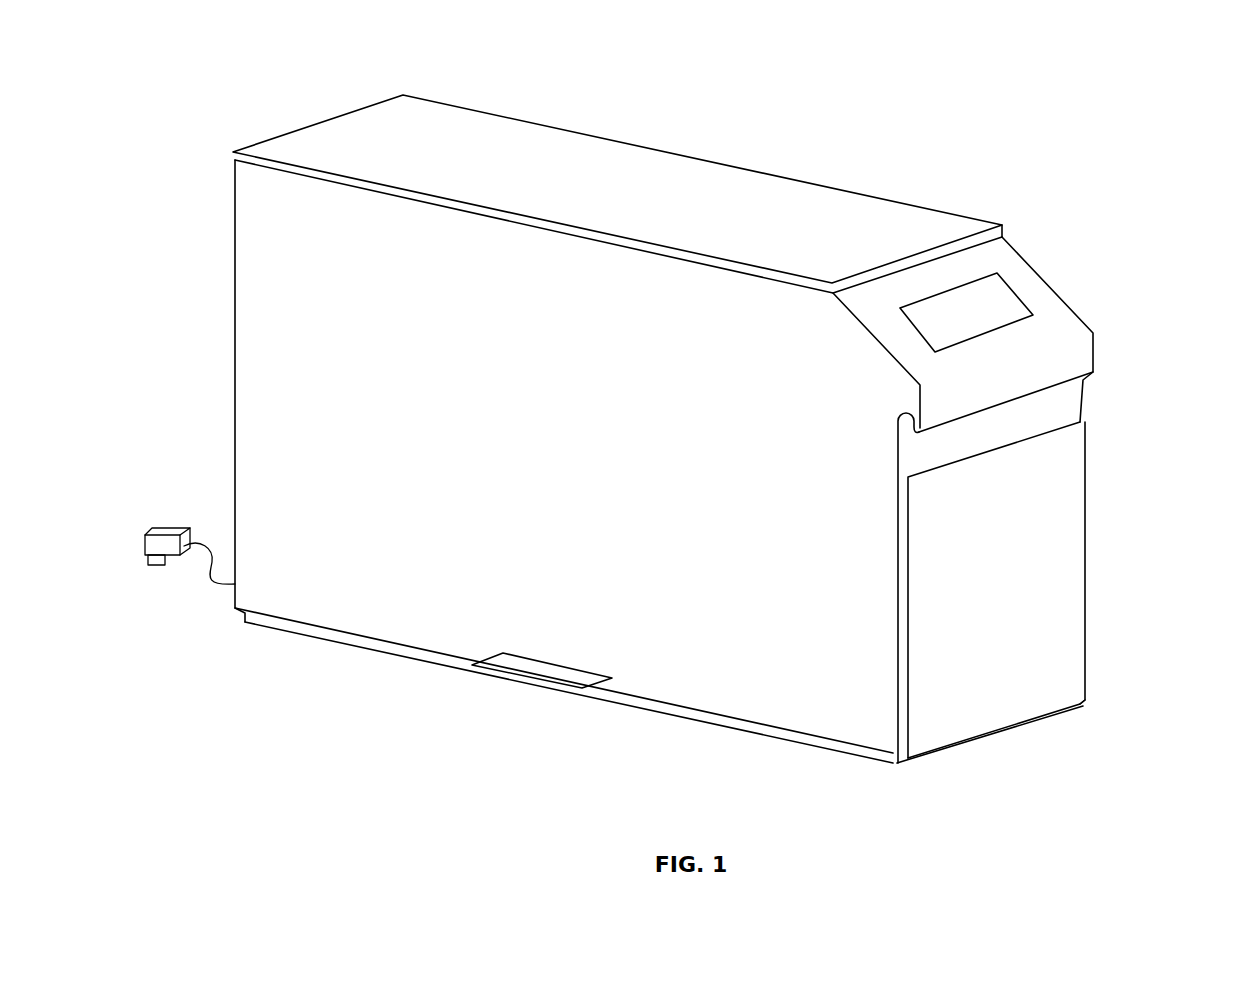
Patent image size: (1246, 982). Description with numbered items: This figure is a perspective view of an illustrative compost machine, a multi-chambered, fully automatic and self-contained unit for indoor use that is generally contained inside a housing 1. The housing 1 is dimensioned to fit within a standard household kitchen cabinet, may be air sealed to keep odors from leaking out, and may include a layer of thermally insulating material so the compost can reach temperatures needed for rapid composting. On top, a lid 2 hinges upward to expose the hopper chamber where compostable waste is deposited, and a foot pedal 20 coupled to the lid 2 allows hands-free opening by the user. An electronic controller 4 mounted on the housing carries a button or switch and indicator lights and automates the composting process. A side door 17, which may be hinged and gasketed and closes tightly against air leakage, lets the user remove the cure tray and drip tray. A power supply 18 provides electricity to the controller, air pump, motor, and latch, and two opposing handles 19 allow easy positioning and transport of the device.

The housing 1 is at (250, 307).
The lid 2 is at (388, 122).
The electronic controller 4 is at (967, 307).
The side door 17 is at (950, 708).
The power supply 18 is at (163, 548).
The handles 19 is at (1042, 383).
The foot pedal 20 is at (548, 672).